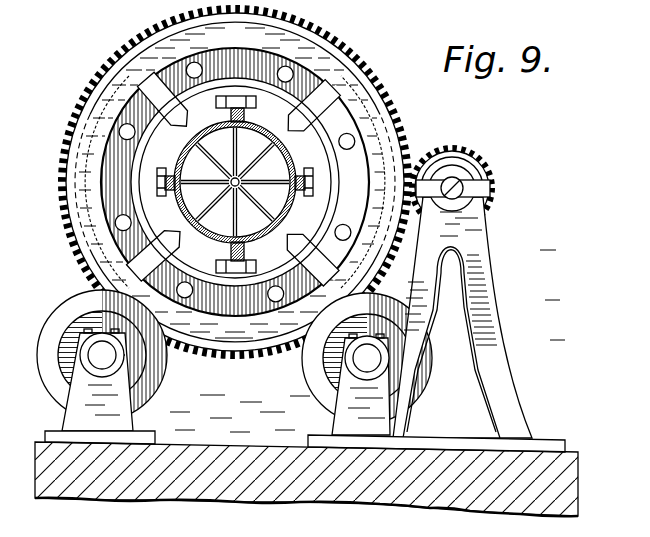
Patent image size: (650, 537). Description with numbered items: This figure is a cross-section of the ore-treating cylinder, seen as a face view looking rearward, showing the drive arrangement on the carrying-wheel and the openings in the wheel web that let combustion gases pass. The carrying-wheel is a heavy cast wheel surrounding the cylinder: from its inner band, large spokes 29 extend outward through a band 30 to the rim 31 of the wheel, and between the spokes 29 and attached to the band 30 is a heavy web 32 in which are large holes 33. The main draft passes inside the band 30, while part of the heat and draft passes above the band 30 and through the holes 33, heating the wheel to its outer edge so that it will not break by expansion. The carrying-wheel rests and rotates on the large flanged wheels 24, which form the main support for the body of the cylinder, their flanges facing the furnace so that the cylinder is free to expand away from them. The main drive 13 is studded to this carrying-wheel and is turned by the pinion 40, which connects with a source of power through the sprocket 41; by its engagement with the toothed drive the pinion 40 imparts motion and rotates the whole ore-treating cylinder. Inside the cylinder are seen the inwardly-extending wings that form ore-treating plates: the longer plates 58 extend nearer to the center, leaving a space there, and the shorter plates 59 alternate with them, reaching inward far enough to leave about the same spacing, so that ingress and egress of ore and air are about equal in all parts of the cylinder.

The main drive 13 is at (403, 136).
The large flanged wheels 24 is at (153, 388).
The spokes 29 is at (299, 139).
The band 30 is at (403, 187).
The rim 31 is at (372, 118).
The web 32 is at (307, 70).
The holes 33 is at (277, 302).
The pinion 40 is at (478, 162).
The sprocket 41 is at (490, 173).
The longer wings or treating-plates 58 is at (238, 160).
The shorter wings or treating-plates 59 is at (222, 163).